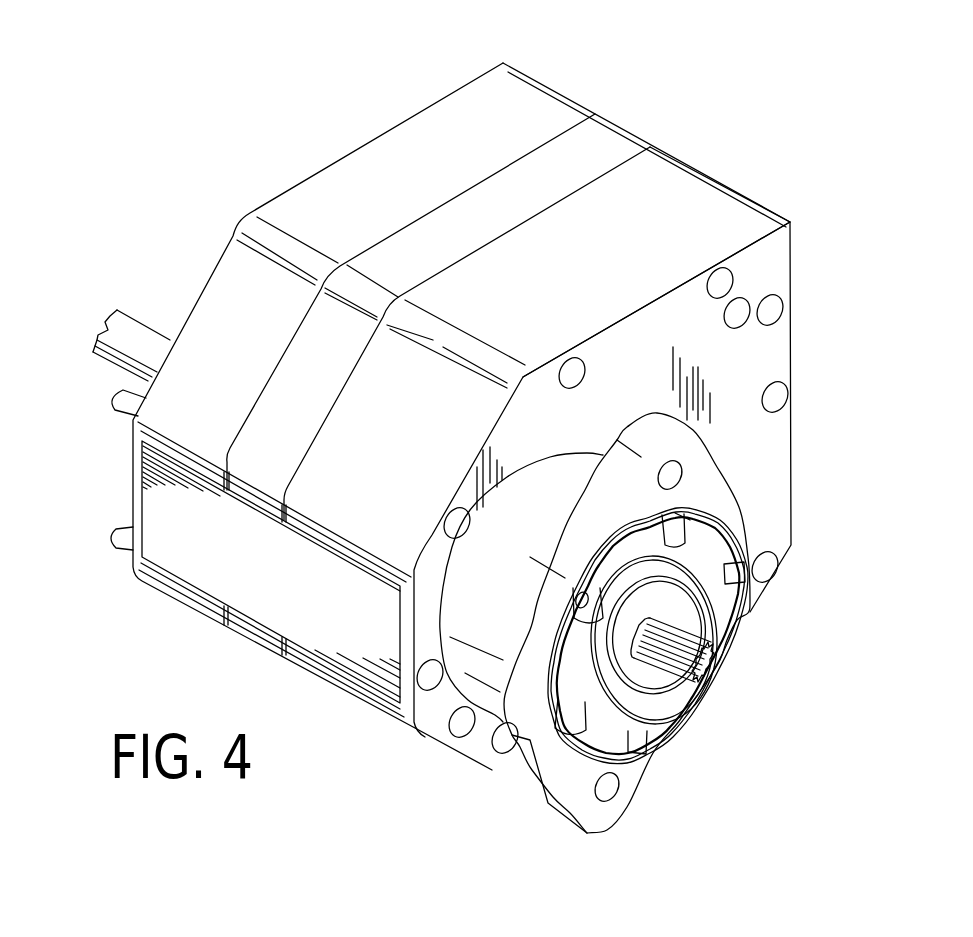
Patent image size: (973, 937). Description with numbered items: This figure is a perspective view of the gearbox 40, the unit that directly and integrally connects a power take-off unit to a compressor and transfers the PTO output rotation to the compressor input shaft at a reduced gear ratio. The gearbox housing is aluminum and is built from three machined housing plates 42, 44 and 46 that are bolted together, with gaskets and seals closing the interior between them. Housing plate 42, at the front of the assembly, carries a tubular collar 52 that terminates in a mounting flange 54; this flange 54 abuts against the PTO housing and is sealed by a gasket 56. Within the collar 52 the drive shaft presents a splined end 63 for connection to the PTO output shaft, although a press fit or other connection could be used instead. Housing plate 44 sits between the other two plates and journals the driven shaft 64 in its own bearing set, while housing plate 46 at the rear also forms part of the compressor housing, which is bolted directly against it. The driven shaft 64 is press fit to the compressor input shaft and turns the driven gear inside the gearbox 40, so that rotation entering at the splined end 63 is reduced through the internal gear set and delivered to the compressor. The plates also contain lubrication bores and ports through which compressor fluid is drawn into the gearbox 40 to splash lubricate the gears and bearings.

The gearbox 40 is at (830, 203).
The housing plate 42 is at (707, 207).
The housing plate 44 is at (613, 147).
The housing plate 46 is at (543, 110).
The tubular collar 52 is at (543, 495).
The mounting flange 54 is at (700, 488).
The gasket 56 is at (727, 628).
The splined end 63 is at (713, 667).
The driven shaft 64 is at (130, 327).